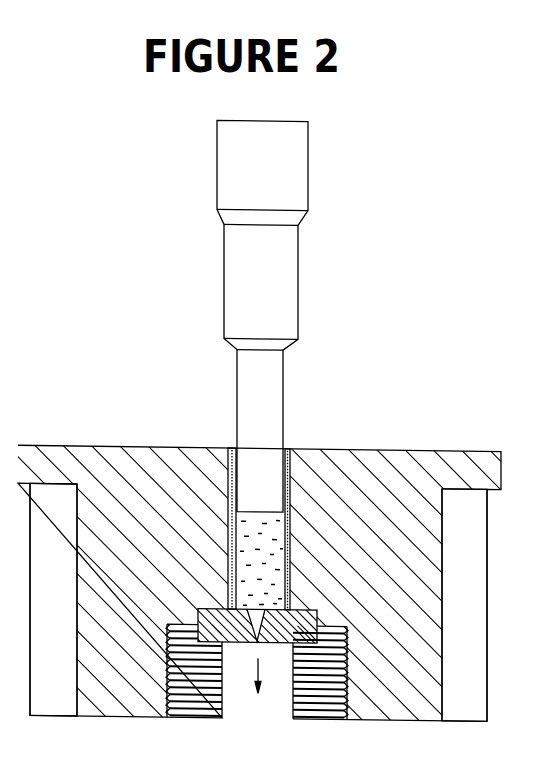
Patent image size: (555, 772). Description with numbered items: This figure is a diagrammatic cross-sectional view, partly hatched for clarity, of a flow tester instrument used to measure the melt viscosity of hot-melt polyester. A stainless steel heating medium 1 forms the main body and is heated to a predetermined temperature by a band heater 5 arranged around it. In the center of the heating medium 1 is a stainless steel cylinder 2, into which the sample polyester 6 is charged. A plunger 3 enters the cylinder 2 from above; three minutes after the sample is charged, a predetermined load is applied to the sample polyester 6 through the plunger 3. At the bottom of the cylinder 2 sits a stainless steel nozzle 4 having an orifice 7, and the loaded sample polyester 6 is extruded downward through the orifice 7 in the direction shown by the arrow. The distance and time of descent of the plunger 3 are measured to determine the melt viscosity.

The heating medium 1 is at (452, 446).
The cylinder 2 is at (293, 529).
The plunger 3 is at (238, 385).
The nozzle 4 is at (317, 608).
The band heater 5 is at (478, 513).
The sample polyester 6 is at (240, 534).
The orifice 7 is at (258, 639).